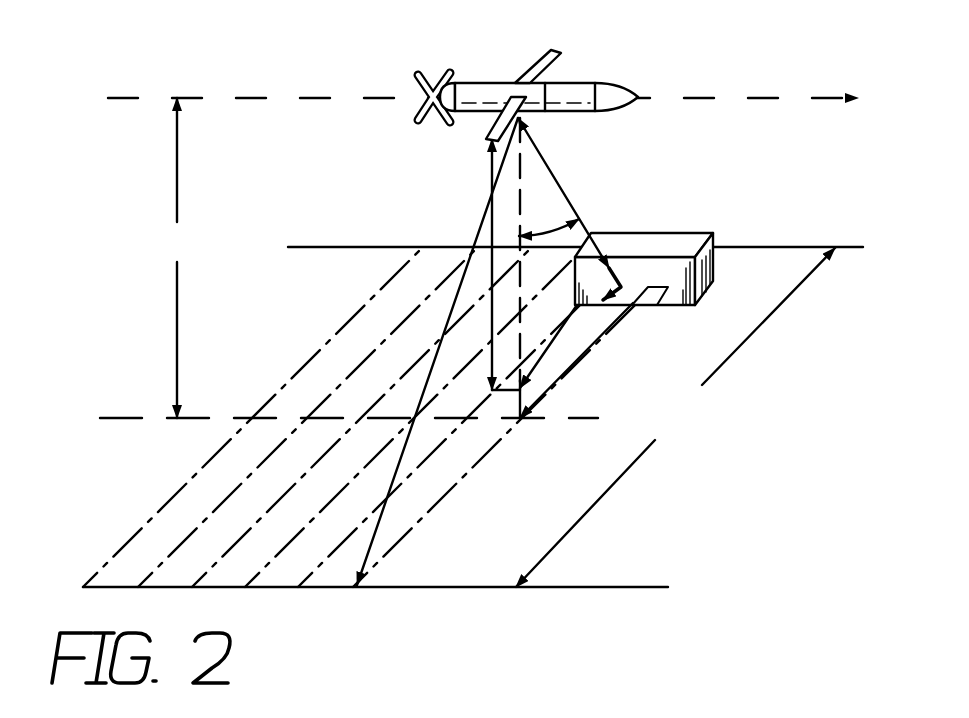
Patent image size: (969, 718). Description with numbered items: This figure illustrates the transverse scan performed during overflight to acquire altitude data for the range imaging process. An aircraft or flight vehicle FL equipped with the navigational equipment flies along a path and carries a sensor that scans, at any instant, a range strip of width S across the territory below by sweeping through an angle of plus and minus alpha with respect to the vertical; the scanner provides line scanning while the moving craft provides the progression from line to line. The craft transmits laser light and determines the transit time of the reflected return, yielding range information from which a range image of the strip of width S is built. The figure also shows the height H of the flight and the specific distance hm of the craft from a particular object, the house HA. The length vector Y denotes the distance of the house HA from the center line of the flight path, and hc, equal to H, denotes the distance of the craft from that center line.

The aircraft or flight vehicle FL is at (507, 80).
The house HA is at (652, 235).
The height of the flight H is at (188, 242).
The distance of the craft from the center line hc is at (420, 170).
The specific distance of the craft from the object hm is at (557, 137).
The length vector Y is at (629, 368).
The range strip width S is at (668, 424).